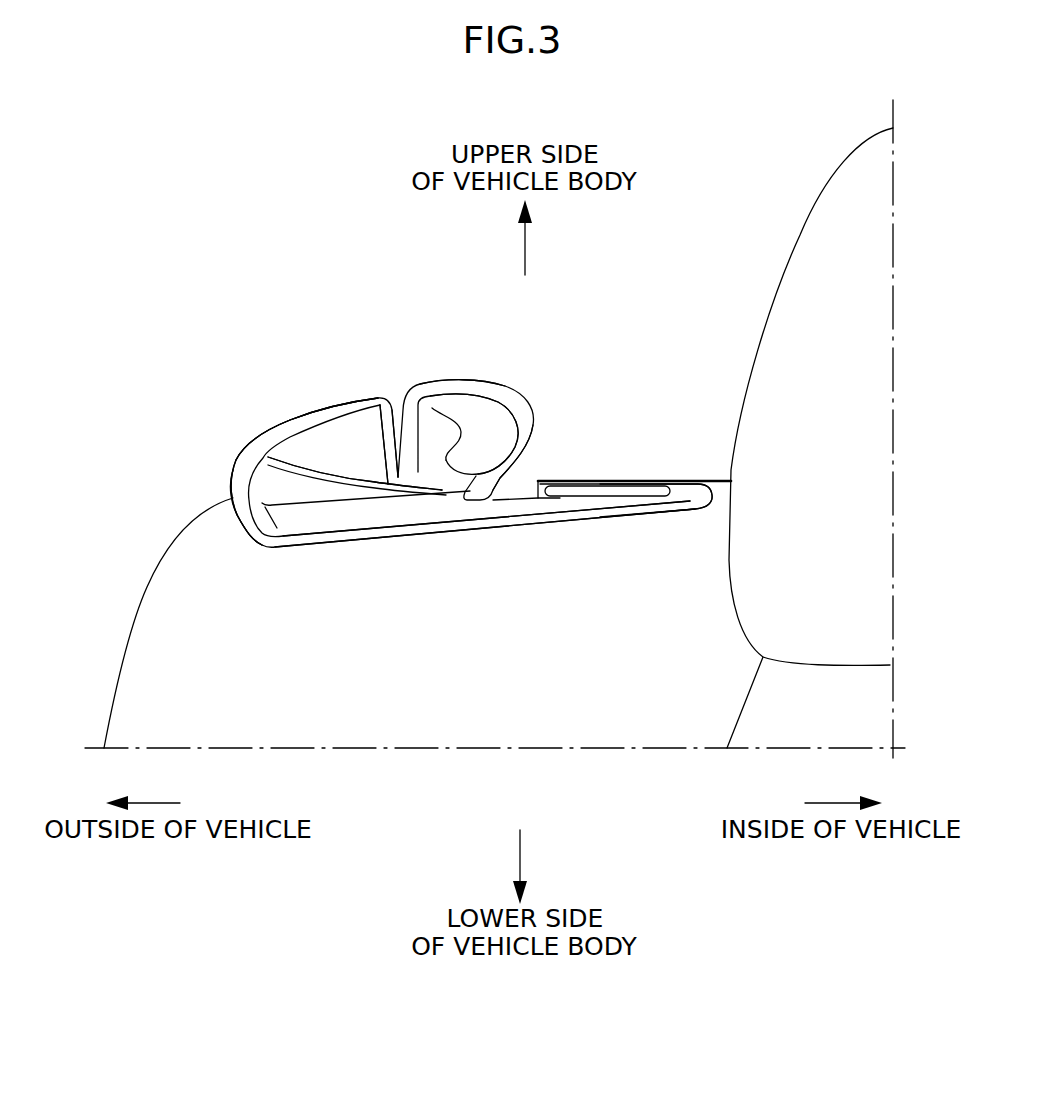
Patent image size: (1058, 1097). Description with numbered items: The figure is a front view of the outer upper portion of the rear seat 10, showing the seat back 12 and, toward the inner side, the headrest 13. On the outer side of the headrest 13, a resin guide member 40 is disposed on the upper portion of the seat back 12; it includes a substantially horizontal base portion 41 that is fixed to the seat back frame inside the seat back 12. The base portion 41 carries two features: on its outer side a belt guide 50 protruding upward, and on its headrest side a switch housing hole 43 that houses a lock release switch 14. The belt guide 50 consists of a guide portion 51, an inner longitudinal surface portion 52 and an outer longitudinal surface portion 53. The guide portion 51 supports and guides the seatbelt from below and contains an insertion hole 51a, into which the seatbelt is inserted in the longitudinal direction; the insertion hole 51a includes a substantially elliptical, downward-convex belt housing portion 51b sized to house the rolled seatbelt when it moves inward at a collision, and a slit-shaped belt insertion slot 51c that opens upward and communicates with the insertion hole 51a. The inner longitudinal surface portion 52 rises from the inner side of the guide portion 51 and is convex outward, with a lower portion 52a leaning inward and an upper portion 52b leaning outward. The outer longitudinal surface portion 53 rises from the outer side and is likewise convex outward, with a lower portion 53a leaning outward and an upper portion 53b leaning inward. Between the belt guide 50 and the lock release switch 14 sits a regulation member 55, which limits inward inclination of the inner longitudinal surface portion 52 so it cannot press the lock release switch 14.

The rear seat 10 is at (814, 208).
The seat back 12 is at (146, 584).
The headrest 13 is at (867, 272).
The lock release switch 14 is at (603, 481).
The guide member 40 is at (368, 539).
The base portion 41 is at (405, 513).
The switch housing hole 43 is at (643, 499).
The belt guide 50 is at (399, 460).
The guide portion 51 is at (300, 495).
The insertion hole 51a is at (453, 486).
The belt housing portion 51b is at (487, 414).
The belt insertion slot 51c is at (393, 440).
The inner longitudinal surface portion 52 is at (527, 392).
The lower portion 52a is at (528, 432).
The upper portion 52b is at (460, 381).
The outer longitudinal surface portion 53 is at (234, 474).
The lower portion 53a is at (240, 526).
The upper portion 53b is at (245, 444).
The regulation member 55 is at (546, 481).